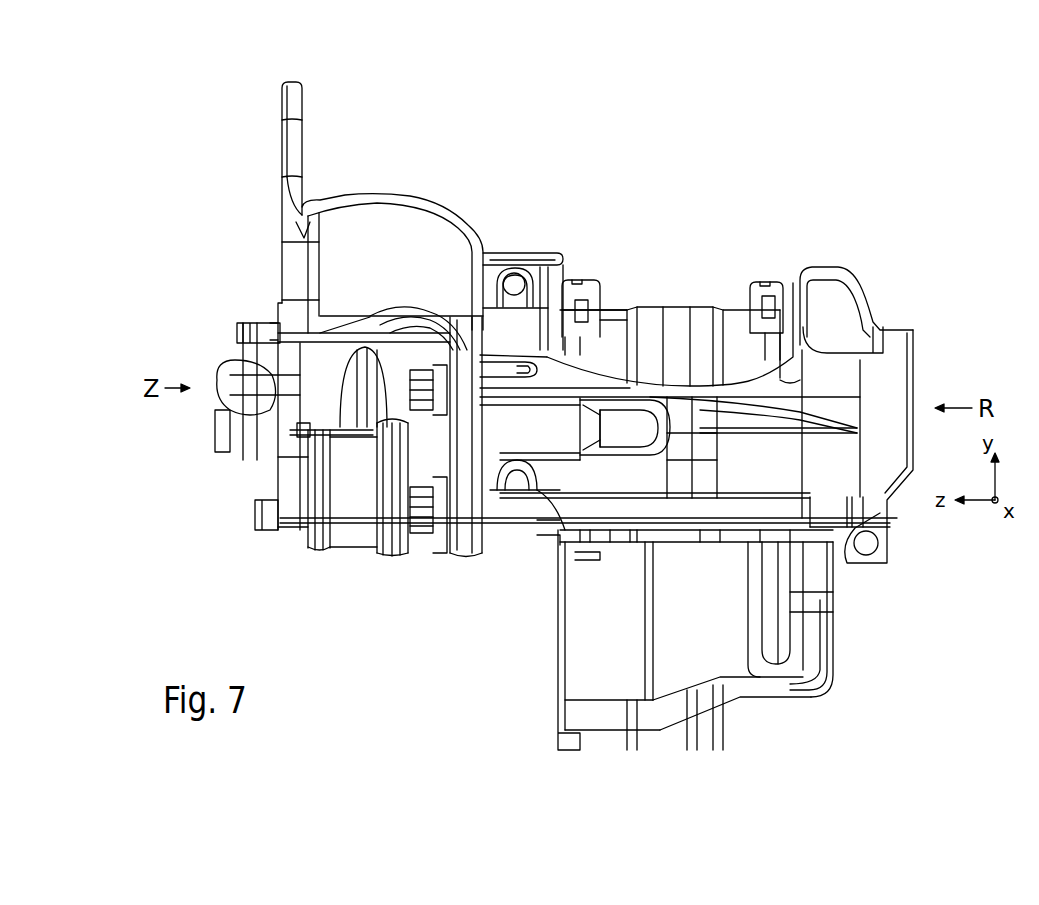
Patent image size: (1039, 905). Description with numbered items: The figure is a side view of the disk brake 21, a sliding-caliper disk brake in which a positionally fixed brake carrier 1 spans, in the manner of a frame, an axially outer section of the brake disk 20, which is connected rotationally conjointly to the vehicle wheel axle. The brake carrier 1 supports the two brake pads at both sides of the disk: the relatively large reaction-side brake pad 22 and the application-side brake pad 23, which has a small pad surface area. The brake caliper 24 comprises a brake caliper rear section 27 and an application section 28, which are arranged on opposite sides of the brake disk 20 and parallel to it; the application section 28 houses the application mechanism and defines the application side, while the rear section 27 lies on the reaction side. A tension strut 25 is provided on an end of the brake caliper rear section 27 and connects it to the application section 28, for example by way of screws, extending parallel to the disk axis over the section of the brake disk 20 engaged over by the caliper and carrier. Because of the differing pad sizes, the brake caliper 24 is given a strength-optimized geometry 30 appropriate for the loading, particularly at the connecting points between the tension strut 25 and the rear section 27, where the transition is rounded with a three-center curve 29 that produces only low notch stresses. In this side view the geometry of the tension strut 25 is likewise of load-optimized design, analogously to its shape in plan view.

The brake carrier 1 is at (703, 652).
The brake disk 20 is at (703, 322).
The disk brake 21 is at (502, 150).
The reaction-side brake pad 22 is at (740, 322).
The application-side brake pad 23 is at (613, 320).
The brake caliper 24 is at (920, 404).
The tension strut 25 is at (585, 657).
The brake caliper rear section 27 is at (845, 307).
The application section 28 is at (292, 493).
The three-center curve 29 is at (784, 386).
The strength-optimized geometry 30 is at (627, 380).